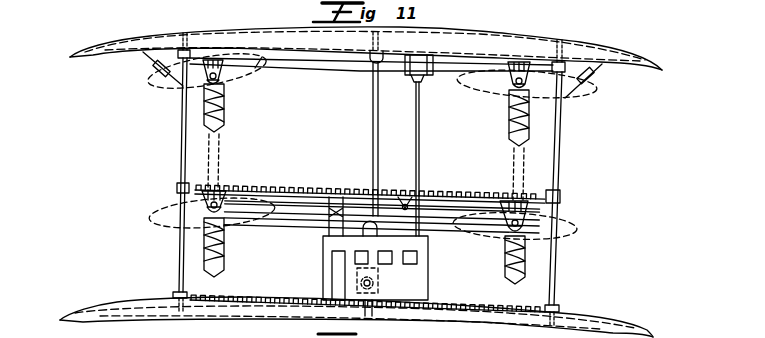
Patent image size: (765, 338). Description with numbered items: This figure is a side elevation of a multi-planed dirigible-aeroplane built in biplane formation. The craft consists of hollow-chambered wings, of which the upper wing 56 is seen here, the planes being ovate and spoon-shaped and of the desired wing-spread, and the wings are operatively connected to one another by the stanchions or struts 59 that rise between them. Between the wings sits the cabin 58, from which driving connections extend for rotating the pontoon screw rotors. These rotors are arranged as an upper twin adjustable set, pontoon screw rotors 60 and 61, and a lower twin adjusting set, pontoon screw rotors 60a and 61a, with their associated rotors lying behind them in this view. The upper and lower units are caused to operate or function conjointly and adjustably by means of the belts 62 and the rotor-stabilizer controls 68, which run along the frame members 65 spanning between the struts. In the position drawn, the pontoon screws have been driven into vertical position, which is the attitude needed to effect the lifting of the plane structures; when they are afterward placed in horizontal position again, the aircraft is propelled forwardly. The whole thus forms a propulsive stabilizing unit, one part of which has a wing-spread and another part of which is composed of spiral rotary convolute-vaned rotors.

The hollow-chambered wing 56 is at (541, 39).
The cabin 58 is at (420, 277).
The stanchions or struts 59 is at (557, 152).
The pontoon screw rotor (upper adjustable set) 60 is at (227, 93).
The pontoon screw rotor (lower adjusting set) 60a is at (203, 243).
The pontoon screw rotor (upper adjustable set) 61 is at (509, 105).
The pontoon screw rotor (lower adjusting set) 61a is at (526, 247).
The belts 62 is at (508, 164).
The upper cross beam 65 is at (292, 73).
The rotor-stabilizer controls 68 is at (331, 61).